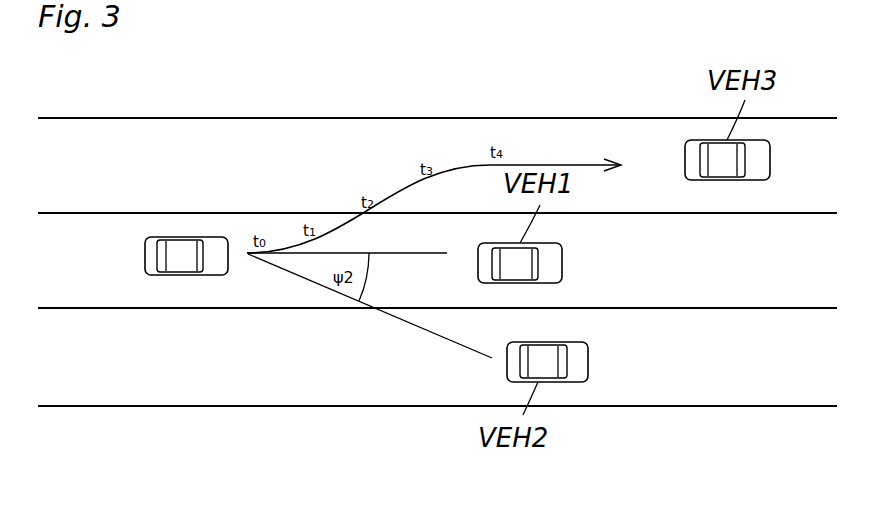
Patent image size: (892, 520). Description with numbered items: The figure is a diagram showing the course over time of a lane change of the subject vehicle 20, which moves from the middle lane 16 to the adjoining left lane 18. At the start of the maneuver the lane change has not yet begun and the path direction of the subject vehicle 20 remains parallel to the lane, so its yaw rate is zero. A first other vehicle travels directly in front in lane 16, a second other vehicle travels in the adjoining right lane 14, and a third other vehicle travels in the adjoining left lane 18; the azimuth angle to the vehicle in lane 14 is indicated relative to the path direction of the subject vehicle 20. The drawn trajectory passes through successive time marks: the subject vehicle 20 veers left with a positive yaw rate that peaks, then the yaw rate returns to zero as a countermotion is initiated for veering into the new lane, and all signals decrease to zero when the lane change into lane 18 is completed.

The lane 14 is at (80, 375).
The middle lane 16 is at (80, 280).
The left lane 18 is at (80, 187).
The subject vehicle 20 is at (184, 237).